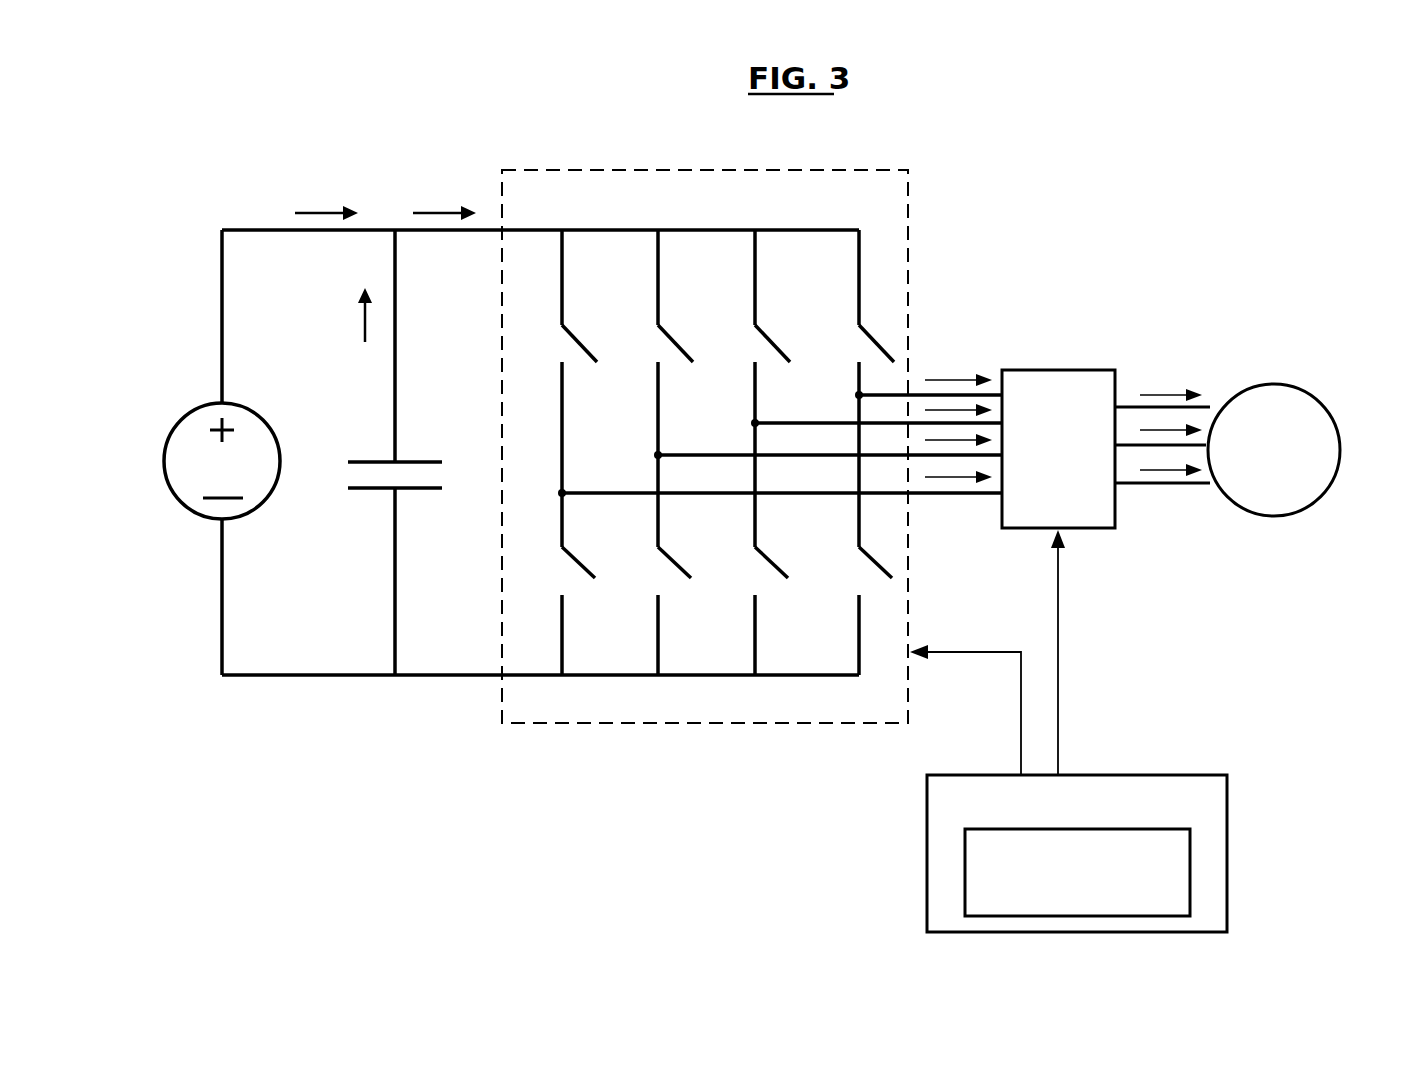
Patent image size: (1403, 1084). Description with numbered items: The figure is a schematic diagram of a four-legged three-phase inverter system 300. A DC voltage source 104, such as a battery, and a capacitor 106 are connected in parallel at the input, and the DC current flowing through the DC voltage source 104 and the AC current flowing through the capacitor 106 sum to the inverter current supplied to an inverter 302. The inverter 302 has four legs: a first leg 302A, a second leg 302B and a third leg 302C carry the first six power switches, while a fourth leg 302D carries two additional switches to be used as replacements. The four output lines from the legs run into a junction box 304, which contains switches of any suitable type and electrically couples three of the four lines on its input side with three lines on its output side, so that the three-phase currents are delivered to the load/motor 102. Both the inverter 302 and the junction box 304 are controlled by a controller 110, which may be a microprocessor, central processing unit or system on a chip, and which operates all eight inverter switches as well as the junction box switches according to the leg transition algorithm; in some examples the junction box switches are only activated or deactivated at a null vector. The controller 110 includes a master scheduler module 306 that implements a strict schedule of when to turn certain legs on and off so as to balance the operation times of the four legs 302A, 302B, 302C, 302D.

The inverter system 300 is at (618, 139).
The inverter 302 is at (908, 230).
The first leg 302A is at (576, 706).
The second leg 302B is at (669, 706).
The third leg 302C is at (762, 706).
The fourth leg 302D is at (856, 706).
The junction box 304 is at (1106, 449).
The load/motor 102 is at (1274, 450).
The DC voltage source 104 is at (224, 462).
The capacitor 106 is at (401, 452).
The controller 110 is at (1068, 731).
The master scheduler module 306 is at (1077, 872).